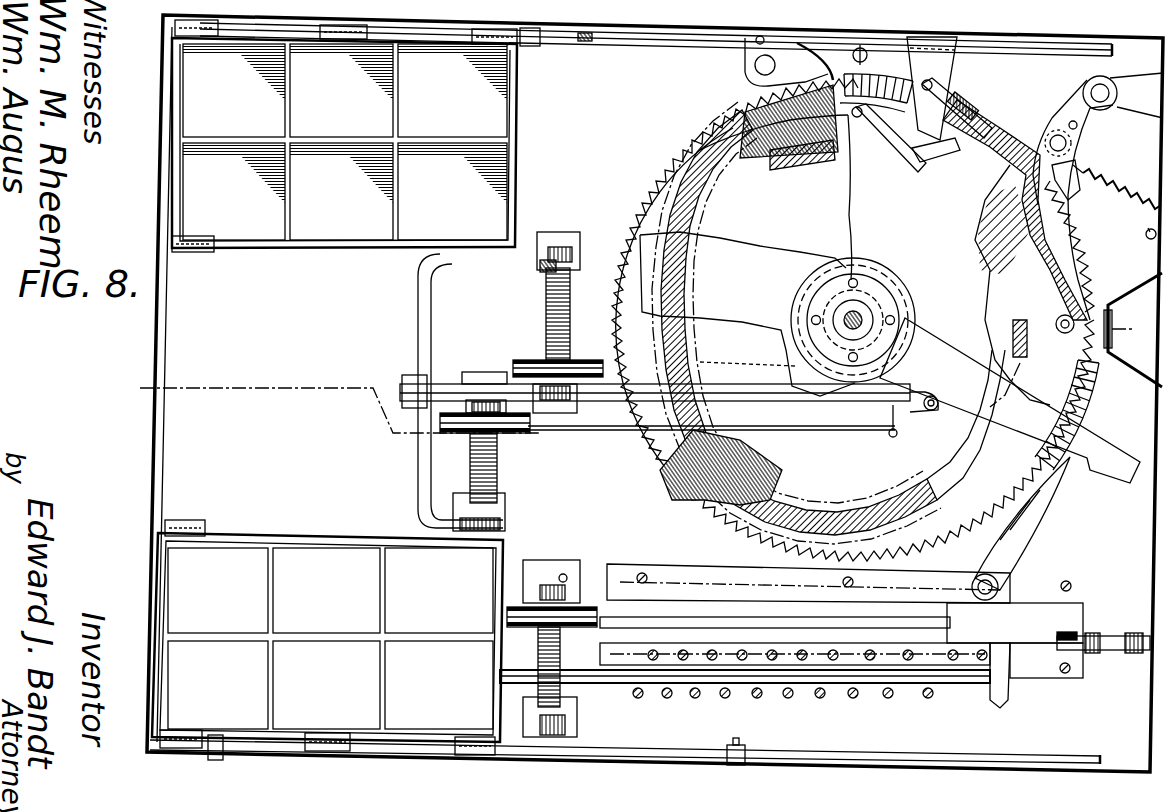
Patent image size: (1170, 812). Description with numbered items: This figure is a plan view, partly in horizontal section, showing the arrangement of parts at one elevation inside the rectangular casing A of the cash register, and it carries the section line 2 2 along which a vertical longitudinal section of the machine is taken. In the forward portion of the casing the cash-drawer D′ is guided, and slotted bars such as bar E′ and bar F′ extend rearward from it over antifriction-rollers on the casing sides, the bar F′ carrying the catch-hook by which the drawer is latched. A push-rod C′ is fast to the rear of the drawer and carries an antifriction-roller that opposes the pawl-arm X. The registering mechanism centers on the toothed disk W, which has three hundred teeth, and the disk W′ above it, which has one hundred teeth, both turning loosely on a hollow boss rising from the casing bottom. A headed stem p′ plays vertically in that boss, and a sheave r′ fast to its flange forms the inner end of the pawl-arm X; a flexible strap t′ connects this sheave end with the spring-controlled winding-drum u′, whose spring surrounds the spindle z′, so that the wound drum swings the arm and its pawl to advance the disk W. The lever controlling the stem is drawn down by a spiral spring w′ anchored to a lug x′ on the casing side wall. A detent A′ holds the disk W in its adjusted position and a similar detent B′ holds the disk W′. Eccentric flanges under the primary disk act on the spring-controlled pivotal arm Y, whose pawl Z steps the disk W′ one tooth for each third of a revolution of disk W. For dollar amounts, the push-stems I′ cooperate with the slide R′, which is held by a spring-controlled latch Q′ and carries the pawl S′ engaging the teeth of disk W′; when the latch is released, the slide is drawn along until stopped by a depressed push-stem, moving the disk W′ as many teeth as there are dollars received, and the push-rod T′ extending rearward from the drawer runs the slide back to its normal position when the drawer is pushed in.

The casing A is at (303, 629).
The cash-drawer D′ is at (344, 159).
The section line 2 is at (129, 387).
The toothed disk W is at (853, 320).
The toothed disk W′ is at (774, 174).
The headed stem p′ is at (858, 314).
The sheave r′ is at (898, 300).
The detent A′ is at (998, 133).
The lug x′ is at (845, 50).
The pivotal arm Y is at (1045, 280).
The pivotal pawl Z is at (1080, 215).
The detent B′ is at (805, 65).
The spiral spring w′ is at (866, 50).
The slotted bar E′ is at (560, 46).
The push-rod C′ is at (610, 420).
The pawl-arm X is at (1010, 400).
The winding-drum u′ is at (540, 360).
The spindle z′ is at (546, 312).
The push-rod T′ is at (955, 690).
The push-stems I′ is at (778, 650).
The slide R′ is at (1015, 611).
The latch Q′ is at (1065, 640).
The pawl S′ is at (1050, 518).
The slotted bar F′ is at (603, 747).
The flexible strap t′ is at (748, 384).